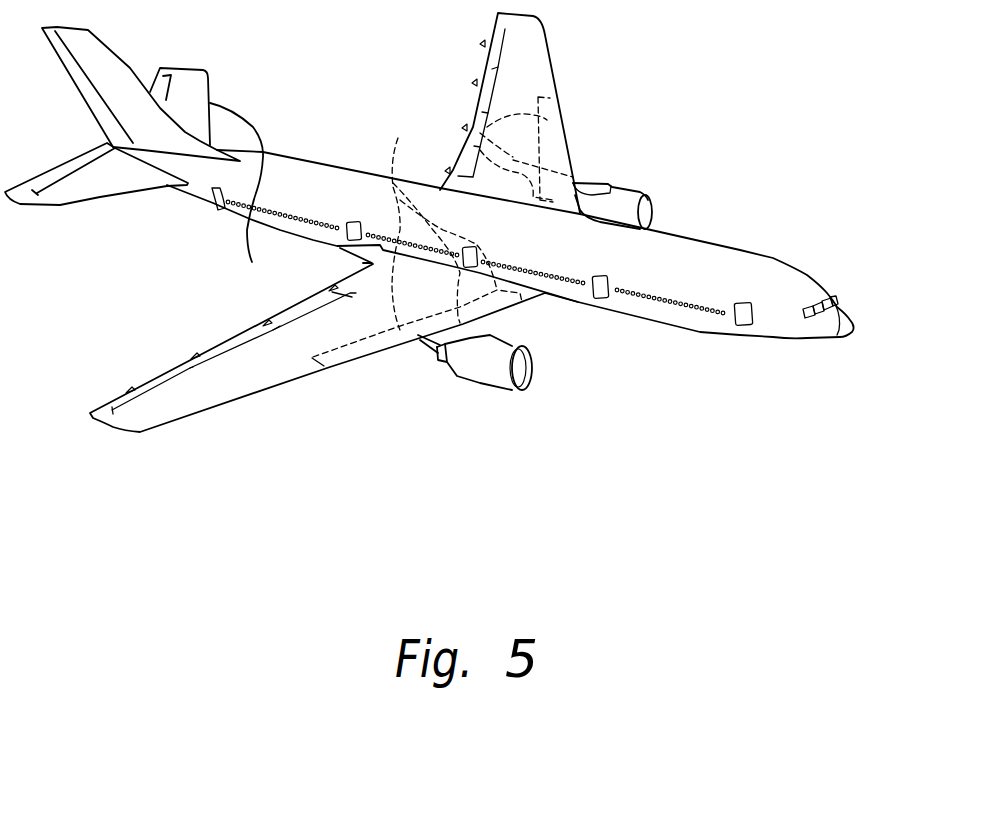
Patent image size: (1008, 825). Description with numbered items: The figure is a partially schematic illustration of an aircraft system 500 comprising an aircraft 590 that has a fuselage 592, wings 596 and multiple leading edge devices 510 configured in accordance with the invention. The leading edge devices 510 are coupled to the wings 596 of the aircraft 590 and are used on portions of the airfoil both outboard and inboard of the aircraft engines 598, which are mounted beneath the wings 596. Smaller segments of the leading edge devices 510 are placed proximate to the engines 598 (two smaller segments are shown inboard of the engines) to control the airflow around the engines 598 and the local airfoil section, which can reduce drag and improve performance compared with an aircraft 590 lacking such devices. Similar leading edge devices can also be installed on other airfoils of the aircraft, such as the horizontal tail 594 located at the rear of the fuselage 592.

The aircraft system 500 is at (760, 53).
The leading edge device 510 is at (463, 130).
The aircraft 590 is at (803, 248).
The fuselage 592 is at (677, 328).
The horizontal tail 594 is at (120, 194).
The wing 596 is at (215, 406).
The aircraft engine 598 is at (490, 380).